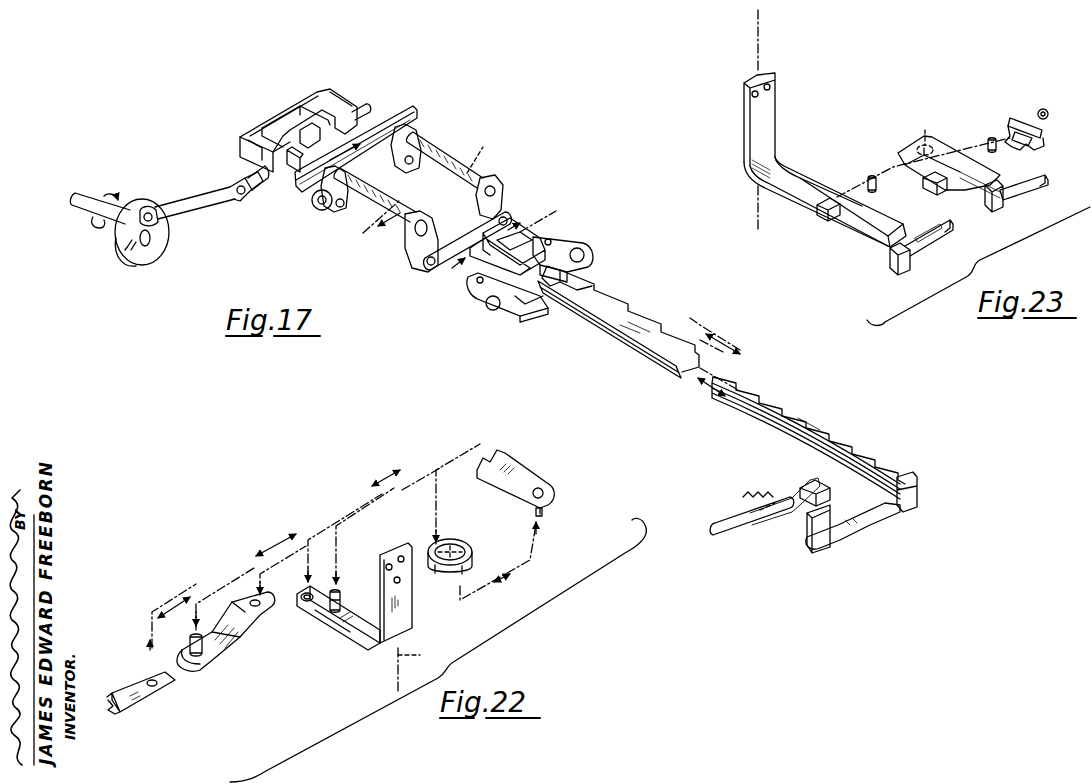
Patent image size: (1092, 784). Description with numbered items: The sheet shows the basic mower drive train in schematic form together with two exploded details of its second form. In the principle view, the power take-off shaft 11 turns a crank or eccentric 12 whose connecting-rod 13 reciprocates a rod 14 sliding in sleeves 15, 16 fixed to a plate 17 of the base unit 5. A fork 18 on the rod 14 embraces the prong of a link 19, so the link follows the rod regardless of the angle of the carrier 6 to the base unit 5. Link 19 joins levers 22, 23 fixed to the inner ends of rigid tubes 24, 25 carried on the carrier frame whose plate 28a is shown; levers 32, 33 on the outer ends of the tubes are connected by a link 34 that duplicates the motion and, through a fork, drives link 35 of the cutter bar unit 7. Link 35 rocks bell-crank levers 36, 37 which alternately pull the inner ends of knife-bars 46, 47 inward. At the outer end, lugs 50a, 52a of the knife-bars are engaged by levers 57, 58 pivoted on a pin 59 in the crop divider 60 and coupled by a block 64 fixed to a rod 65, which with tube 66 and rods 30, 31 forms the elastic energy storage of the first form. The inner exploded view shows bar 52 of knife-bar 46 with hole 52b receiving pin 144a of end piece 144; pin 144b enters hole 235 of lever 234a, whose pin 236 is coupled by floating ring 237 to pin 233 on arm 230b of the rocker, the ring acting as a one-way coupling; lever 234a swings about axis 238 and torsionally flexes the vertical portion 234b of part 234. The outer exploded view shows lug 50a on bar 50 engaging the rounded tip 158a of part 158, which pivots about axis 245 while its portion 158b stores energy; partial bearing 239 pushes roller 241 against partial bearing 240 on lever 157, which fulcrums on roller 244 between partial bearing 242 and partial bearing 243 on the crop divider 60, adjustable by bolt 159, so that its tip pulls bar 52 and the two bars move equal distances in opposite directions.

In FIG. 17, the base unit 5 is at (246, 118).
In FIG. 17, the carrier section 6 is at (408, 208).
In FIG. 17, the cutter bar unit 7 is at (729, 409).
In FIG. 17, the shaft 11 is at (86, 196).
In FIG. 17, the crank or eccentric 12 is at (160, 238).
In FIG. 17, the connecting-rod 13 is at (205, 201).
In FIG. 17, the rod 14 is at (362, 106).
In FIG. 17, the sleeve 15 is at (258, 146).
In FIG. 17, the sleeve 16 is at (340, 105).
In FIG. 17, the plate 17 is at (280, 118).
In FIG. 17, the fork 18 is at (295, 150).
In FIG. 17, the link 19 is at (312, 203).
In FIG. 17, the lever 22 is at (330, 205).
In FIG. 17, the lever 23 is at (415, 130).
In FIG. 17, the tube 24 is at (360, 200).
In FIG. 17, the tube 25 is at (446, 153).
In FIG. 17, the plate 28a is at (408, 106).
In FIG. 17, the rod 30 is at (370, 236).
In FIG. 17, the rod 31 is at (483, 152).
In FIG. 17, the lever 32 is at (410, 258).
In FIG. 17, the lever 33 is at (502, 188).
In FIG. 17, the link 34 is at (475, 232).
In FIG. 17, the link 35 is at (545, 222).
In FIG. 17, the bell-crank lever 36 is at (478, 305).
In FIG. 17, the bell-crank lever 37 is at (583, 243).
In FIG. 17, the knife-bar 46 is at (672, 342).
In FIG. 17, the knife-bar 47 is at (612, 338).
In FIG. 17, the lever 57 is at (900, 478).
In FIG. 17, the lever 58 is at (858, 538).
In FIG. 17, the pin 59 is at (790, 490).
In FIG. 17, the crop divider 60 is at (742, 497).
In FIG. 23, the crop divider 60 is at (1018, 116).
In FIG. 17, the block 64 is at (808, 482).
In FIG. 17, the rod 65 is at (750, 535).
In FIG. 17, the tube 66 is at (778, 528).
In FIG. 23, the axis 245 is at (764, 52).
In FIG. 23, the part 158 is at (792, 200).
In FIG. 23, the rounded tip 158a is at (805, 172).
In FIG. 23, the portion 158b is at (744, 114).
In FIG. 23, the partial bearing 239 is at (826, 220).
In FIG. 23, the roller 241 is at (871, 172).
In FIG. 23, the partial bearing 240 is at (922, 130).
In FIG. 23, the lever 157 is at (955, 150).
In FIG. 23, the partial bearing 242 is at (930, 190).
In FIG. 23, the roller 244 is at (991, 136).
In FIG. 23, the bolt 159 is at (1048, 112).
In FIG. 23, the partial bearing 243 is at (1040, 146).
In FIG. 23, the bar 52 is at (1038, 184).
In FIG. 22, the bar 52 is at (126, 682).
In FIG. 23, the lug 52a is at (998, 212).
In FIG. 22, the hole 52b is at (153, 686).
In FIG. 23, the bar 50 is at (940, 236).
In FIG. 23, the lug 50a is at (899, 276).
In FIG. 22, the end piece 144 is at (240, 604).
In FIG. 22, the pin 144a is at (200, 654).
In FIG. 22, the pin 144b is at (258, 612).
In FIG. 22, the part 234 is at (366, 648).
In FIG. 22, the lever 234a is at (352, 630).
In FIG. 22, the vertical portion 234b is at (410, 614).
In FIG. 22, the hole 235 is at (306, 604).
In FIG. 22, the pin 236 is at (338, 590).
In FIG. 22, the floating ring 237 is at (458, 540).
In FIG. 22, the axis 238 is at (425, 655).
In FIG. 22, the portion 230b is at (528, 474).
In FIG. 22, the pin 233 is at (544, 514).